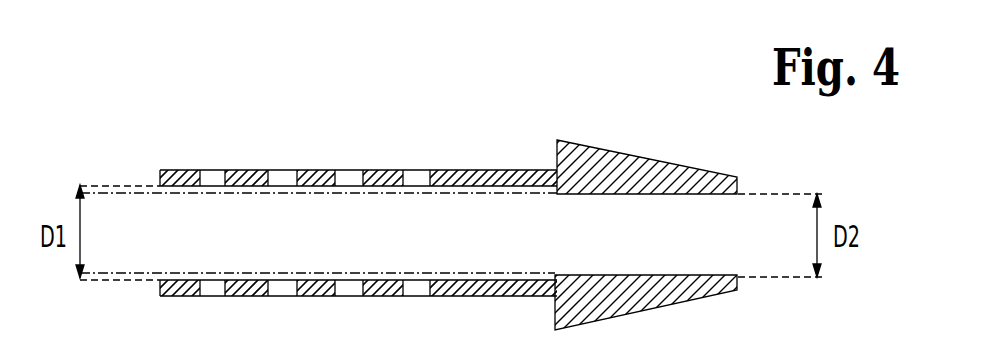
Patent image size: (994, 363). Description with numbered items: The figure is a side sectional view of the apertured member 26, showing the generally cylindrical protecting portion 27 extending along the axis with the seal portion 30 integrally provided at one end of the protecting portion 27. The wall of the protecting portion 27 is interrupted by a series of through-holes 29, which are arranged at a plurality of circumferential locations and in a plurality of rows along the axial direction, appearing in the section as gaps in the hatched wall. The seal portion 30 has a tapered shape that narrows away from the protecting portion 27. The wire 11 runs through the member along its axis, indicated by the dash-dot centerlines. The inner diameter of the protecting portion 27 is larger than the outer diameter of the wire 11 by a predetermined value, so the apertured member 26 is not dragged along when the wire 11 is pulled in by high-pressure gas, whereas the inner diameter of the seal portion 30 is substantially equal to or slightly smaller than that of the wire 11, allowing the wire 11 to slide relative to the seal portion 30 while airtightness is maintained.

The wire 11 is at (125, 182).
The apertured member 26 is at (477, 175).
The protecting portion 27 is at (480, 170).
The through-holes 29 is at (204, 170).
The seal portion 30 is at (633, 155).